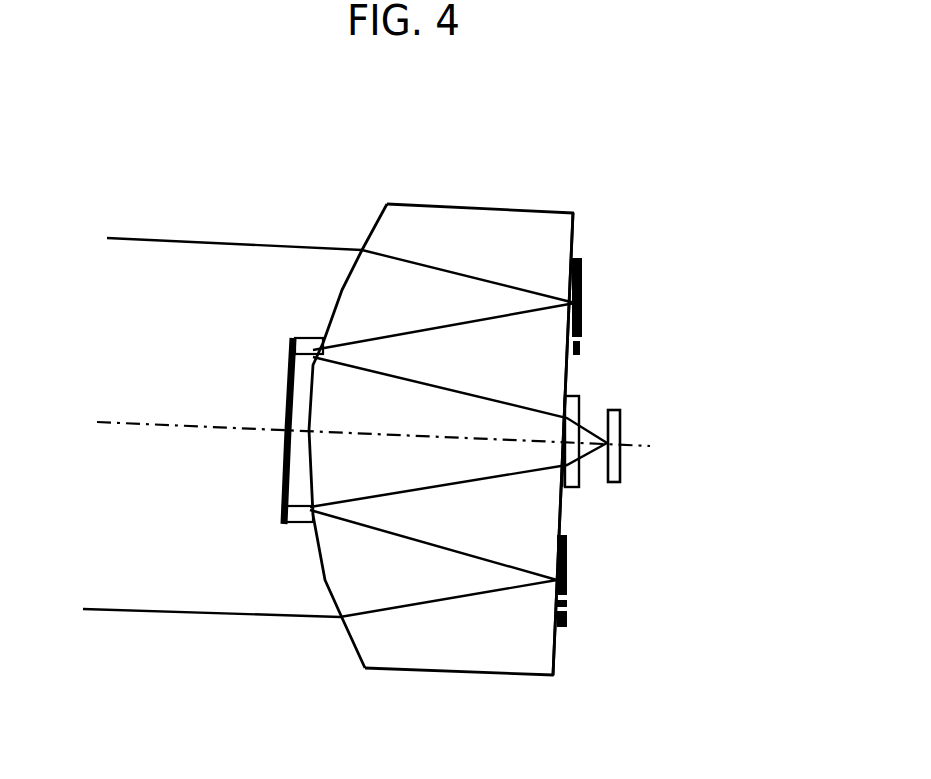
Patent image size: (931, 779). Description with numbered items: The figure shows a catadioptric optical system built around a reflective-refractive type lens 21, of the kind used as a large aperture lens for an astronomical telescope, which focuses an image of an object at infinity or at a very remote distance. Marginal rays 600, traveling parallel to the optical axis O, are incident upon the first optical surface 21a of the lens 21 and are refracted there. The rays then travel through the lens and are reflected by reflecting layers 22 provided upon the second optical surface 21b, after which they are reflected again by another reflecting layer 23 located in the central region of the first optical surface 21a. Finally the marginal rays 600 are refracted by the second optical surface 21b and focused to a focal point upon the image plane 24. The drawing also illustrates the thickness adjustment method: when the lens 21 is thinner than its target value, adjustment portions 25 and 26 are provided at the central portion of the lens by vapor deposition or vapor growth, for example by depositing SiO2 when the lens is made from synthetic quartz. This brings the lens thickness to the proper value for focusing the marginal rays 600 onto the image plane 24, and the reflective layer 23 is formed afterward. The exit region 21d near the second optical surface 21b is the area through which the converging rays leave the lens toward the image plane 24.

The reflective-refractive type lens 21 is at (537, 238).
The first optical surface 21a is at (350, 640).
The second optical surface 21b is at (557, 652).
The exit surface of prism 21d is at (583, 475).
The reflecting layers 22 is at (582, 296).
The reflecting layer 23 is at (283, 387).
The image plane 24 is at (622, 420).
The adjustment portion 25 is at (580, 398).
The adjustment portion 26 is at (297, 335).
The marginal rays 600 is at (309, 430).
The optical axis O is at (345, 422).